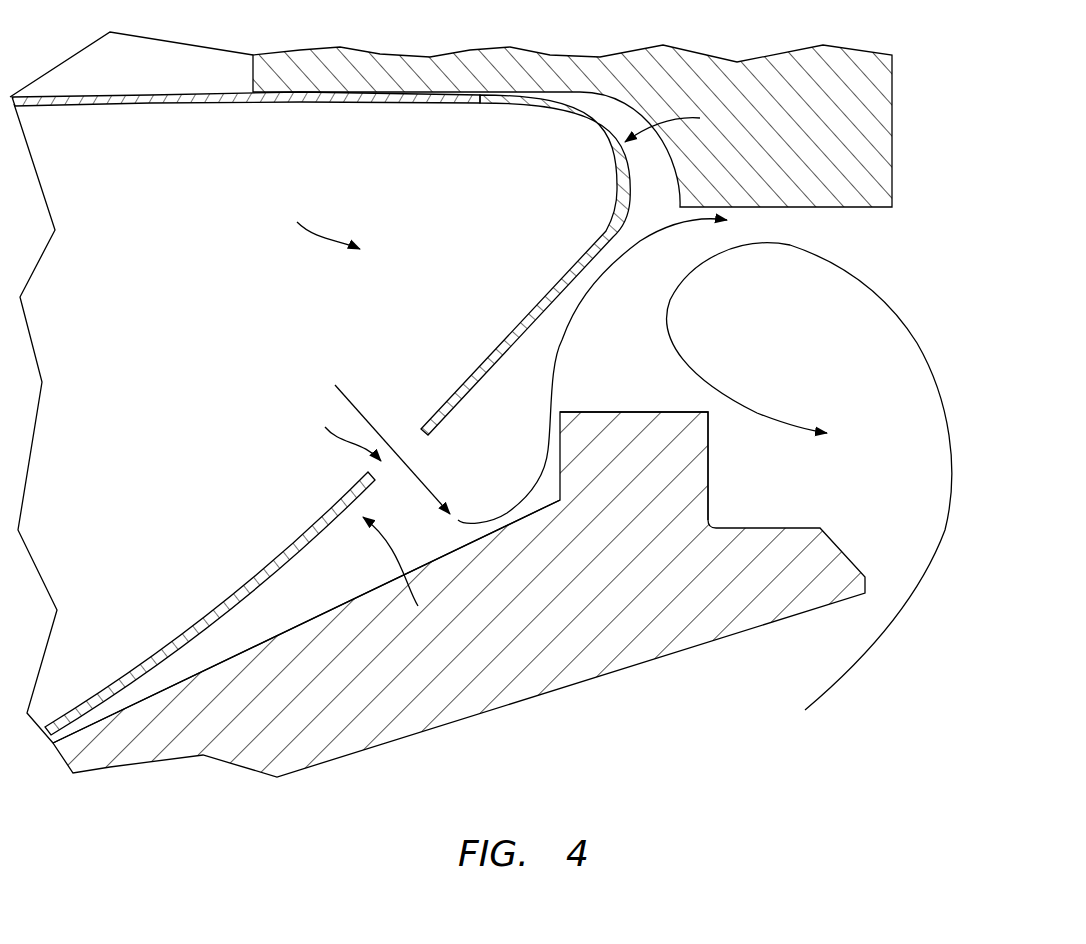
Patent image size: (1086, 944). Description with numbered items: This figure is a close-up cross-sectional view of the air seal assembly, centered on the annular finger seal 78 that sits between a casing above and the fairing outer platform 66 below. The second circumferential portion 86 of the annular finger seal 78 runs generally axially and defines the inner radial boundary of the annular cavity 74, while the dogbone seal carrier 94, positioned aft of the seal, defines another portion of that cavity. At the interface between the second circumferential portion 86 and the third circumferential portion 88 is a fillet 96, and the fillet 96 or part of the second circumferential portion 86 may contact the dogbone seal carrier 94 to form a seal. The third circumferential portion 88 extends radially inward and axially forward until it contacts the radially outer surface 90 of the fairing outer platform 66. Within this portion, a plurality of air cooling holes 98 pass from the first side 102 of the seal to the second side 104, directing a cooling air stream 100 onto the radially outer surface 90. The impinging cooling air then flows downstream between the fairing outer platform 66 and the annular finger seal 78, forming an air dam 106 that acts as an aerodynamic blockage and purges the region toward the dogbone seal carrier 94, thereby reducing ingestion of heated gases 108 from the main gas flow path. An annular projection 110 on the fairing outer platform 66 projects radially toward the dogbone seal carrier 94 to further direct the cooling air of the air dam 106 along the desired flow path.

The fairing outer platform 66 is at (459, 594).
The annular cavity 74 is at (131, 387).
The annular finger seal 78 is at (315, 220).
The second circumferential portion 86 is at (246, 140).
The third circumferential portion 88 is at (210, 603).
The radially outer surface 90 is at (306, 612).
The dogbone seal carrier 94 is at (572, 126).
The fillet 96 is at (678, 121).
The air cooling holes 98 is at (335, 429).
The cooling air stream 100 is at (392, 416).
The first side 102 is at (516, 265).
The second side 104 is at (404, 576).
The air dam 106 is at (592, 371).
The heated gases 108 is at (851, 476).
The annular projection 110 is at (678, 466).